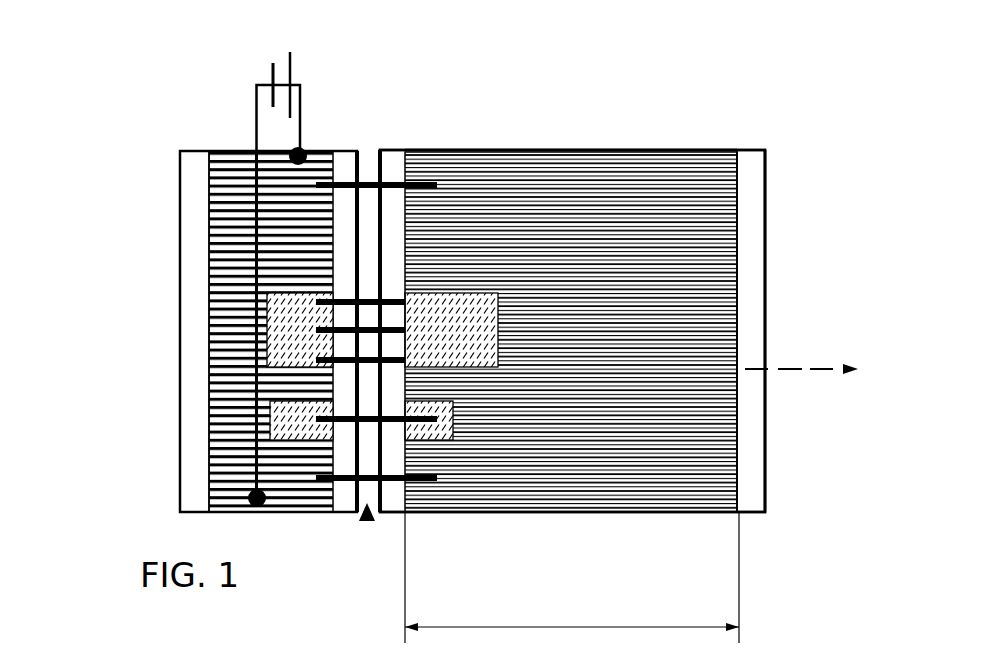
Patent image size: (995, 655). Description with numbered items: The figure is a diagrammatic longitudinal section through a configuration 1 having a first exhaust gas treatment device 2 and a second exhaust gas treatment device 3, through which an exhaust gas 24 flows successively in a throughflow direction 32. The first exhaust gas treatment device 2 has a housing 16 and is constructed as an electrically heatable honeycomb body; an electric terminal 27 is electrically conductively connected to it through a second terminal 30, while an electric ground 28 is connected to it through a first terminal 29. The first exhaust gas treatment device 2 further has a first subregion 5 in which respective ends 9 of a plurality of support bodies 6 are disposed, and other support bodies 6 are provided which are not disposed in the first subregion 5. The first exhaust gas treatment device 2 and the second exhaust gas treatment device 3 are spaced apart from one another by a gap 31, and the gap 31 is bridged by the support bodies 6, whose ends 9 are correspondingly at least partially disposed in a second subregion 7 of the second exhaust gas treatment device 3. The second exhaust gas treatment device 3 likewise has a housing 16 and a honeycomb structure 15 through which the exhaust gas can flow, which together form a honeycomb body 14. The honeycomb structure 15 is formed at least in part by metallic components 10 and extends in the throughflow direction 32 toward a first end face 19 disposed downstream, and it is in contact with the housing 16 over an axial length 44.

The configuration 1 is at (96, 224).
The first exhaust gas treatment device 2 is at (247, 437).
The second exhaust gas treatment device 3 is at (660, 480).
The first subregion 5 is at (226, 334).
The support bodies 6 is at (407, 487).
The second subregion 7 is at (483, 300).
The ends 9 is at (423, 297).
The metallic components 10 is at (575, 478).
The honeycomb body 14 is at (598, 108).
The honeycomb structure 15 is at (508, 195).
The housing 16 is at (185, 480).
The first end face 19 is at (736, 227).
The exhaust gas 24 is at (782, 370).
The electric terminal 27 is at (273, 70).
The electric ground 28 is at (300, 107).
The first terminal 29 is at (302, 148).
The second terminal 30 is at (292, 514).
The gap 31 is at (369, 524).
The throughflow direction 32 is at (822, 373).
The axial length 44 is at (572, 584).